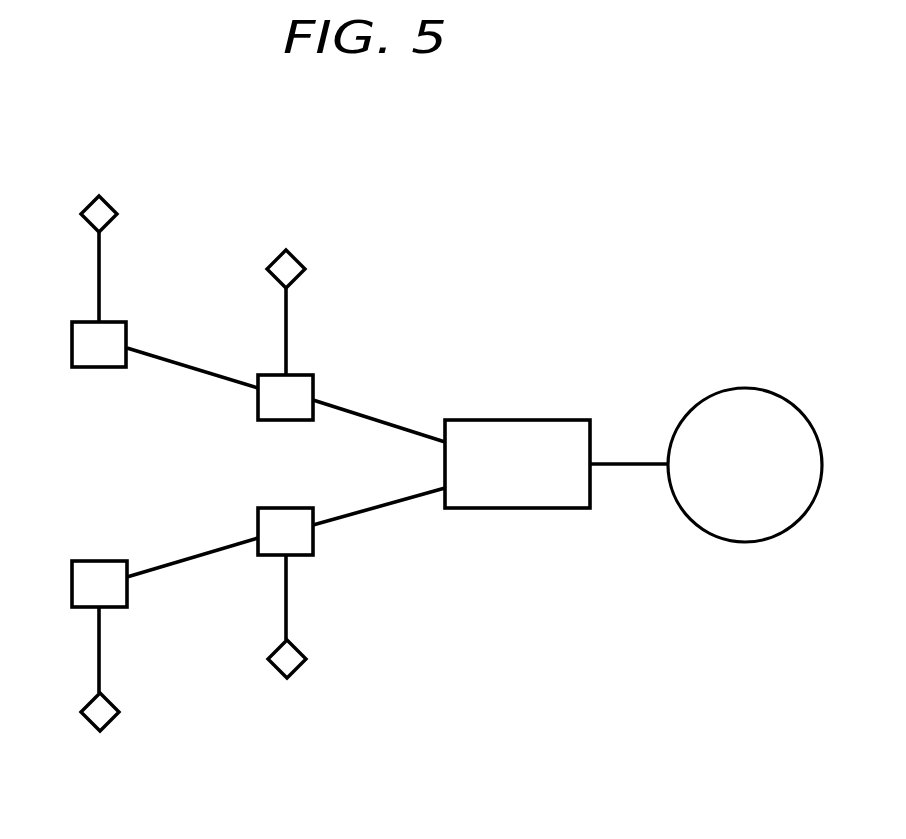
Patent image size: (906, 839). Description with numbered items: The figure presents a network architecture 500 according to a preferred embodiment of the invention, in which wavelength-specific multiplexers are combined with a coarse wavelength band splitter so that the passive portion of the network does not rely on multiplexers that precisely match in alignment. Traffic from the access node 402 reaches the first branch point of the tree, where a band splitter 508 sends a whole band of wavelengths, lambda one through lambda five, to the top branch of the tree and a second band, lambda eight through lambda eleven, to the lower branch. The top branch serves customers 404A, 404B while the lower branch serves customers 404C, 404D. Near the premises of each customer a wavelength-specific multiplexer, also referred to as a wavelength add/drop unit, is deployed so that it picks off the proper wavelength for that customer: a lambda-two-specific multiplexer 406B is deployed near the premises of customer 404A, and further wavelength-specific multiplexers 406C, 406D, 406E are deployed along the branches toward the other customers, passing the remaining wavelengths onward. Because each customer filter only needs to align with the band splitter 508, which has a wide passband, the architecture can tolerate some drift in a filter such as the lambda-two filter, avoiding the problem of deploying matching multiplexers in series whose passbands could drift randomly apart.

The network architecture 500 is at (560, 119).
The access node 402 is at (747, 388).
The band splitter 508 is at (520, 419).
The customer 404A is at (288, 250).
The customer 404B is at (103, 196).
The customer 404C is at (287, 679).
The customer 404D is at (100, 731).
The wavelength-specific multiplexer 406B is at (300, 375).
The wavelength-specific multiplexer 406C is at (113, 322).
The wavelength-specific multiplexer 406D is at (287, 508).
The wavelength-specific multiplexer 406E is at (99, 561).